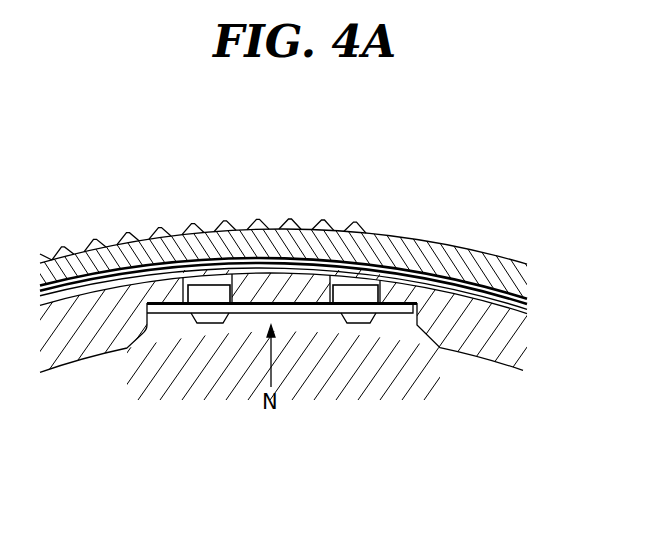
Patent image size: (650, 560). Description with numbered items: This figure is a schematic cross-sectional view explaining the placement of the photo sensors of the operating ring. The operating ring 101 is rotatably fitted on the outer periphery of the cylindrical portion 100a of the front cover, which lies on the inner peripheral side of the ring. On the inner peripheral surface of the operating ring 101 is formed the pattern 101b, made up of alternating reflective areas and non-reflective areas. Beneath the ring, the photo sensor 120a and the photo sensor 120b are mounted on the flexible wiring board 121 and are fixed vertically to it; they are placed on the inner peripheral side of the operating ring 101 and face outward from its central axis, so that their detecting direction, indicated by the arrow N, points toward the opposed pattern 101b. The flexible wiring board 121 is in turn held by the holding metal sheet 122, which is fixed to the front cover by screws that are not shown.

The operating ring 101 is at (68, 268).
The pattern 101b is at (202, 261).
The flexible wiring board 121 is at (398, 290).
The cylindrical portion 100a is at (73, 350).
The holding metal sheet 122 is at (393, 308).
The photo sensor 120a is at (352, 292).
The photo sensor 120b is at (205, 293).